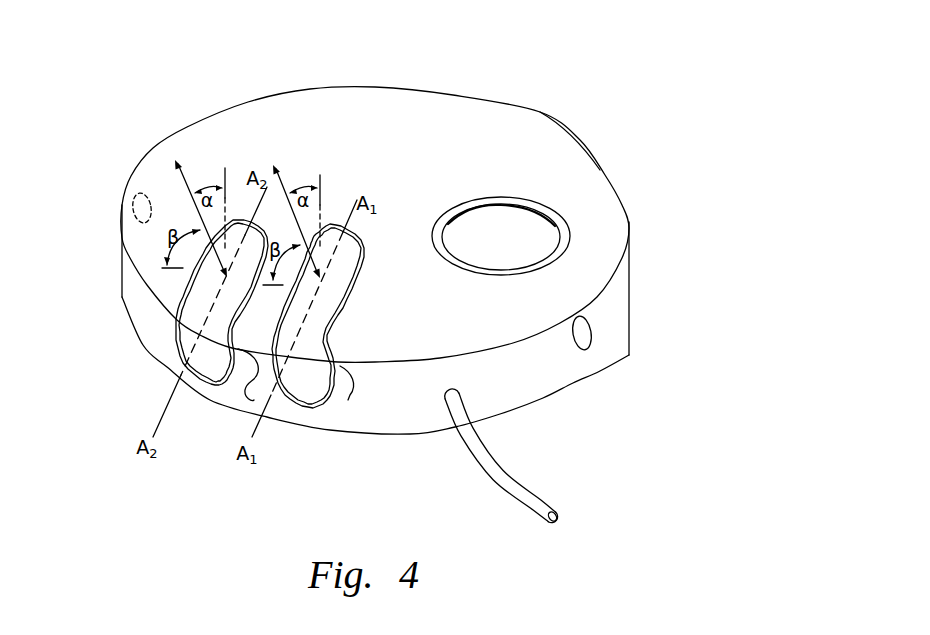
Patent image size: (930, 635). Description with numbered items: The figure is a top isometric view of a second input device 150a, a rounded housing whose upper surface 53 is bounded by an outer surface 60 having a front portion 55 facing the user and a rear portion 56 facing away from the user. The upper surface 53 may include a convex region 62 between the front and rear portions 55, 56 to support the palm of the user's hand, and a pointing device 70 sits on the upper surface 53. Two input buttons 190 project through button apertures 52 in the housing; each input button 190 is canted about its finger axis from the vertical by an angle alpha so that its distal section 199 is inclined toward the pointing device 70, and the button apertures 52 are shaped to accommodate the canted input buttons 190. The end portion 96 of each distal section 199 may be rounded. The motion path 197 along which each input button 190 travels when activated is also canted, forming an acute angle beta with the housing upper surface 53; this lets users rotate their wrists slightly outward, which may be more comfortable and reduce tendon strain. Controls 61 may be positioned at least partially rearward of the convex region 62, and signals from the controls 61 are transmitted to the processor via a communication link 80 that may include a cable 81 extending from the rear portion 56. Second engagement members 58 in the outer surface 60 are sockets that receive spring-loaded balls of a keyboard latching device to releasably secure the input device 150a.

The second input device 150a is at (556, 64).
The front portion 55 is at (453, 95).
The convex region 62 is at (307, 123).
The upper surface 53 is at (570, 157).
The outer surface 60 is at (610, 308).
The rear portion 56 is at (392, 430).
The pointing device 70 is at (578, 215).
The second engagement member 58 is at (130, 212).
The button aperture 52 is at (176, 329).
The input button 190 is at (184, 300).
The motion path 197 is at (187, 188).
The end portion 96 is at (207, 368).
The distal section 199 is at (248, 397).
The controls 61 is at (370, 315).
The communication link 80 is at (537, 456).
The cable 81 is at (500, 457).